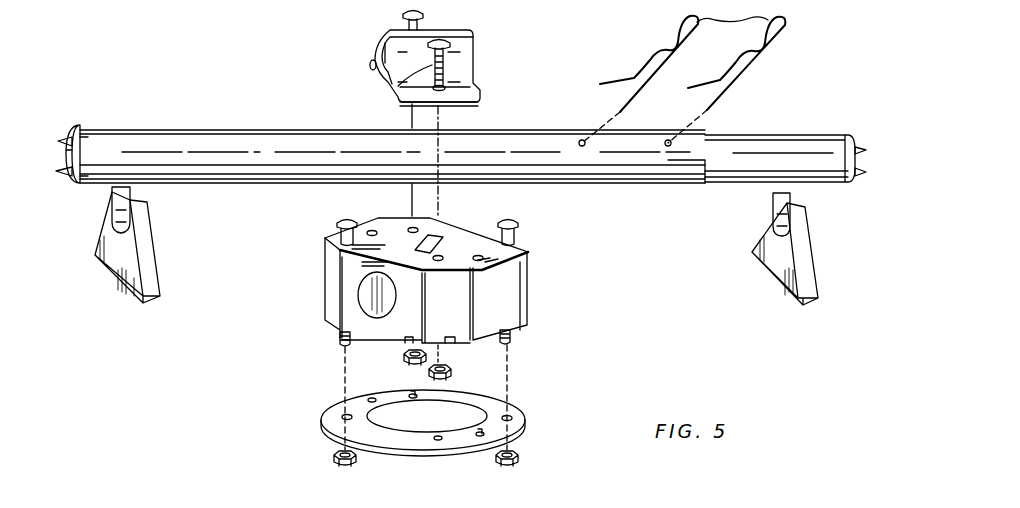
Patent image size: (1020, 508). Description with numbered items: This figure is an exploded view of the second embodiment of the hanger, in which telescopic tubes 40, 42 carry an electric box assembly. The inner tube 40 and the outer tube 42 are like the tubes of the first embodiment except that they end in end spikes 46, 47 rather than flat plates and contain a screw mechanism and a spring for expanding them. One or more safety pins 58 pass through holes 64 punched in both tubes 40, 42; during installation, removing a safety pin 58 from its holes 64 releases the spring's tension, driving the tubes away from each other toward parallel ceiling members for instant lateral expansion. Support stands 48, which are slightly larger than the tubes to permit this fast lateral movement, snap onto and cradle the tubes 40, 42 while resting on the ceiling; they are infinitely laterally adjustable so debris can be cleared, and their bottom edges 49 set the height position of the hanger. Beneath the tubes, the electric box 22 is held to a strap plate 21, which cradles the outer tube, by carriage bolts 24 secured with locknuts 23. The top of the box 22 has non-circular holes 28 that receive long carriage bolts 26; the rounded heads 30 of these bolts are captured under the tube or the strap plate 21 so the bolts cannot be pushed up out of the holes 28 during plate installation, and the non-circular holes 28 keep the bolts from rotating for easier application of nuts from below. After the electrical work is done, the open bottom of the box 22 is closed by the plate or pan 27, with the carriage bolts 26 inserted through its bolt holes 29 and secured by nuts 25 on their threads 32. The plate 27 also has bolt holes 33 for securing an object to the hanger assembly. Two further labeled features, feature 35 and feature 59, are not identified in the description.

The strap plate 21 is at (474, 66).
The electric box 22 is at (513, 257).
The locknuts 23 is at (428, 372).
The carriage bolts 24 is at (455, 40).
The nuts 25 is at (334, 457).
The long carriage bolts 26 is at (519, 225).
The plate or pan 27 is at (490, 397).
The non-circular holes 28 is at (372, 230).
The bolt holes 29 is at (343, 417).
The rounded heads 30 is at (403, 17).
The threads 32 is at (403, 95).
The bolt holes 33 is at (413, 397).
The slot / opening 35 is at (432, 244).
The inner tube 40 is at (780, 138).
The outer tube 42 is at (264, 138).
The end spike 46 is at (858, 173).
The end spike 47 is at (60, 180).
The support stands 48 is at (122, 290).
The bottom edges 49 is at (112, 272).
The safety pins 58 is at (775, 18).
The fingers 59 is at (697, 22).
The holes 64 is at (667, 146).